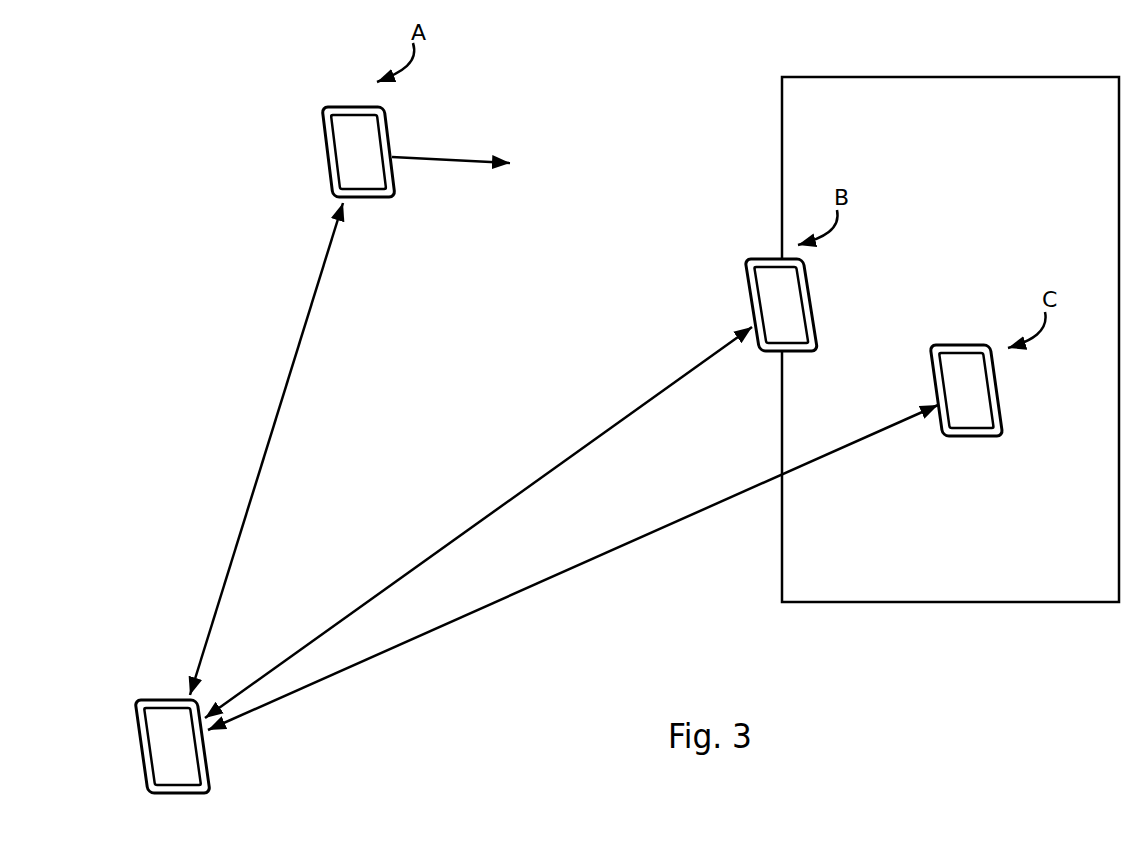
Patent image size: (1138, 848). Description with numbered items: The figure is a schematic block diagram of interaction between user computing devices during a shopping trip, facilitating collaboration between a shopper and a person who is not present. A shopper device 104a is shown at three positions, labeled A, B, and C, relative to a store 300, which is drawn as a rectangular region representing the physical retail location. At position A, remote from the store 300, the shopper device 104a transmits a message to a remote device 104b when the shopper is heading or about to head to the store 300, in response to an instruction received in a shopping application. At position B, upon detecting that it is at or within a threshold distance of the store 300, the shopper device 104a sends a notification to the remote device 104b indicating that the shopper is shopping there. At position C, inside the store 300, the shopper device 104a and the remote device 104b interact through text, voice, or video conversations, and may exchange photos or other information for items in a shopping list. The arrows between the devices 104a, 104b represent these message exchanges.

The shopper device 104a is at (343, 112).
The remote device 104b is at (158, 702).
The store 300 is at (999, 116).